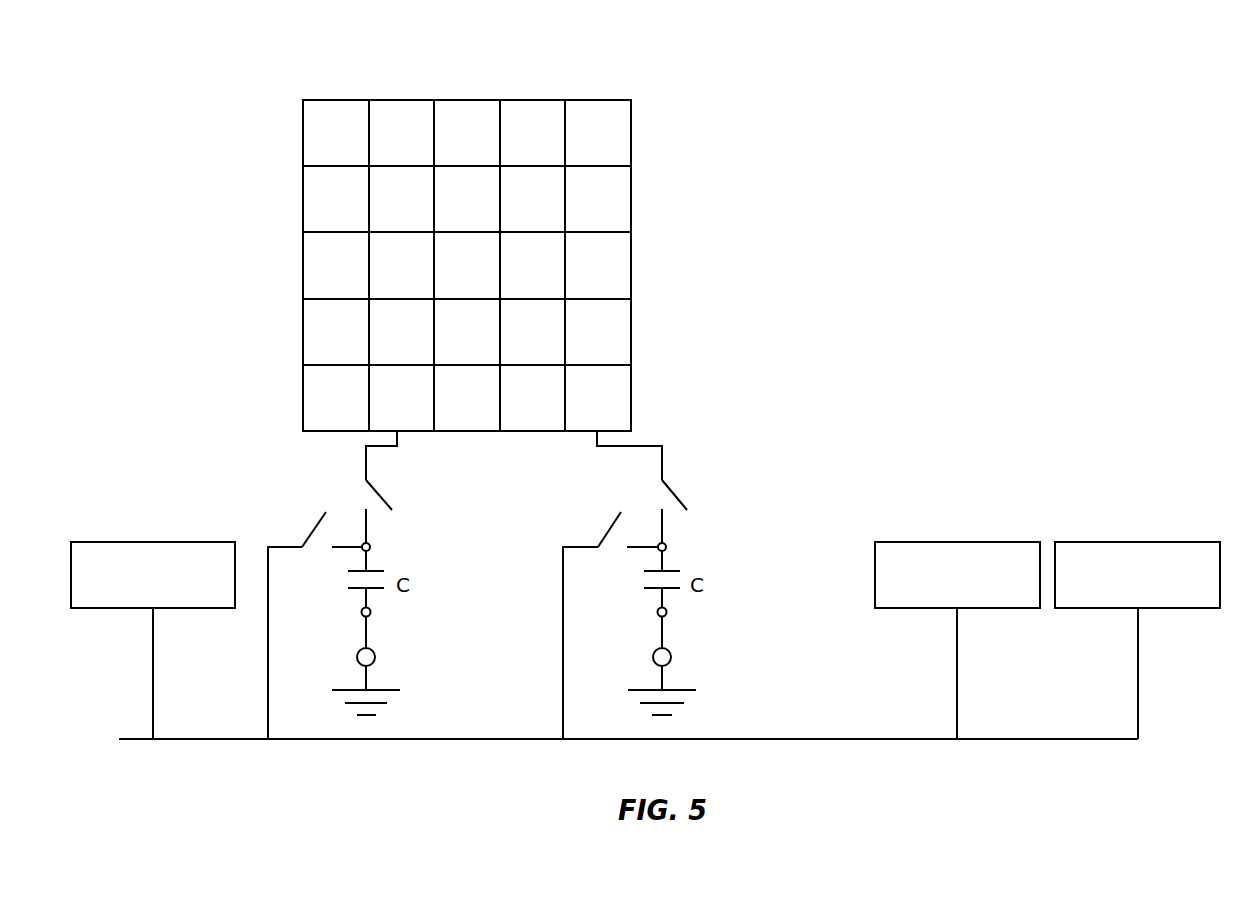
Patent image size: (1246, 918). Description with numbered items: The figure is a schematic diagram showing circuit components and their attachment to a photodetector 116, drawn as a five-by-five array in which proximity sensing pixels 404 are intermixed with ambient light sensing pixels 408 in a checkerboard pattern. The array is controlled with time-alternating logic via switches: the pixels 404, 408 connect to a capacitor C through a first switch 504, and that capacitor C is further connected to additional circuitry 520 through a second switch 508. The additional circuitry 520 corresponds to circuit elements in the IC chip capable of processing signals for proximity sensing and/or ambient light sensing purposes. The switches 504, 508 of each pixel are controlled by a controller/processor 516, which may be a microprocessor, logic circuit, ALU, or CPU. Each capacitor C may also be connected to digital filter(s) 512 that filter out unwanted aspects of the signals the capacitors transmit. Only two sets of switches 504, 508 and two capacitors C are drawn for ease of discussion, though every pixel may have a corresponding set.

The photodetector 116 is at (283, 85).
The proximity sensing pixel 404 is at (624, 118).
The ambient light sensing pixel 408 is at (519, 118).
The first switch 504 is at (372, 486).
The second switch 508 is at (302, 530).
The digital filter(s) 512 is at (953, 542).
The controller/processor 516 is at (1135, 542).
The additional circuitry 520 is at (150, 542).